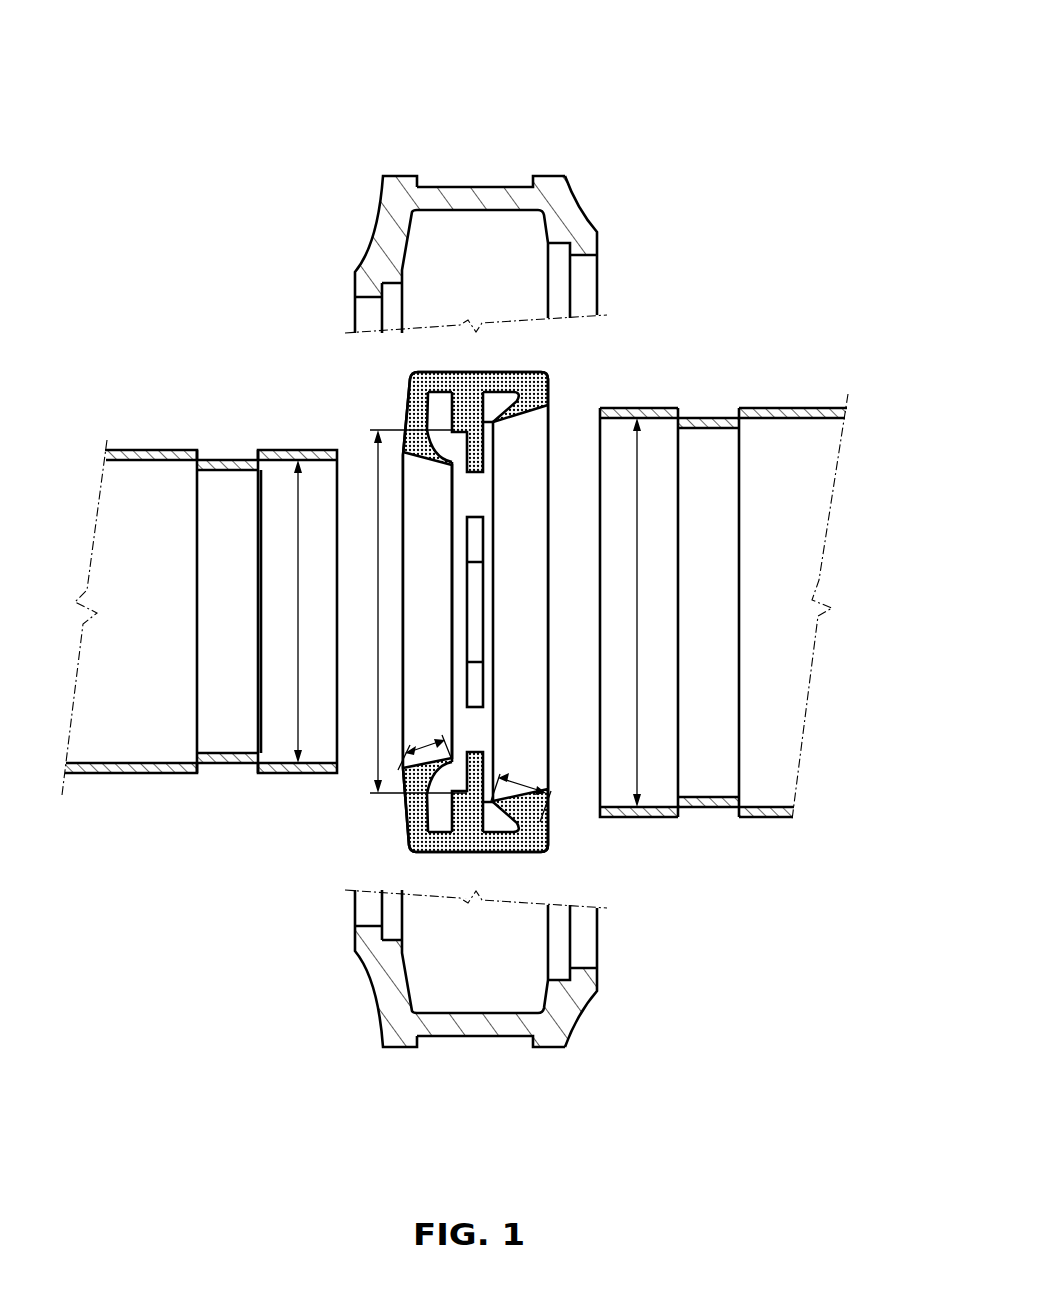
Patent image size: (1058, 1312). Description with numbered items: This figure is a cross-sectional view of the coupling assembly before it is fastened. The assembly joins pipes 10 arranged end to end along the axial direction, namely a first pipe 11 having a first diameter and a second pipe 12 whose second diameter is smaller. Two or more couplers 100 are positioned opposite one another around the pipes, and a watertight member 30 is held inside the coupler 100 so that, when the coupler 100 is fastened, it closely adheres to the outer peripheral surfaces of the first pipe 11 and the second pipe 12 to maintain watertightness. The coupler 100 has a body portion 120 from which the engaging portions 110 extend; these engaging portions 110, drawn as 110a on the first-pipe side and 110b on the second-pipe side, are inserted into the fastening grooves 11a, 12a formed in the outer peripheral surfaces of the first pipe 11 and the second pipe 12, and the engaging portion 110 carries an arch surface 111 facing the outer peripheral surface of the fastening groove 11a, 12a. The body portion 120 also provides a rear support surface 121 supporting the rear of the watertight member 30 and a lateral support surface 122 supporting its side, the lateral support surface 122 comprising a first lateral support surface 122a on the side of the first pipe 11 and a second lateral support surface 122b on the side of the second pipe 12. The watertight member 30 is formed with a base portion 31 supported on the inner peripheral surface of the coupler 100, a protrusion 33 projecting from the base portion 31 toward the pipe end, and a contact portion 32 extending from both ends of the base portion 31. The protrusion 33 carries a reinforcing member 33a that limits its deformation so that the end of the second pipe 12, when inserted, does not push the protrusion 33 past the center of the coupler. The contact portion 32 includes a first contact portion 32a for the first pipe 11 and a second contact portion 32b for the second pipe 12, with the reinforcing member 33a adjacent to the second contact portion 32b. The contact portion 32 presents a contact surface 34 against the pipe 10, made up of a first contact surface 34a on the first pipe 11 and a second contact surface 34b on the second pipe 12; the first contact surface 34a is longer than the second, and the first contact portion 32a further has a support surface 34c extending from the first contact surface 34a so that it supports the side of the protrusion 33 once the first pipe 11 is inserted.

The coupler 100 is at (350, 155).
The pipes 10 is at (476, 549).
The first pipe 11 is at (745, 549).
The fastening groove 11a is at (708, 418).
The second pipe 12 is at (199, 552).
The fastening groove 12a is at (233, 462).
The watertight member 30 is at (498, 761).
The base portion 31 is at (484, 856).
The contact portion 32 is at (475, 662).
The first contact portion 32a is at (520, 815).
The second contact portion 32b is at (403, 792).
The protrusion 33 is at (478, 755).
The reinforcing member 33a is at (475, 810).
The contact surface 34 is at (498, 680).
The first contact surface 34a is at (540, 805).
The second contact surface 34b is at (408, 772).
The support surface 34c is at (500, 828).
The engaging portion 110 is at (477, 524).
The first housing portion 110a is at (679, 197).
The second housing portion 110b is at (368, 247).
The arch surface 111 is at (600, 293).
The body portion 120 is at (490, 187).
The rear support surface 121 is at (550, 242).
The lateral support surface 122 is at (551, 198).
The first lateral support surface 122a is at (556, 245).
The second lateral support surface 122b is at (410, 250).